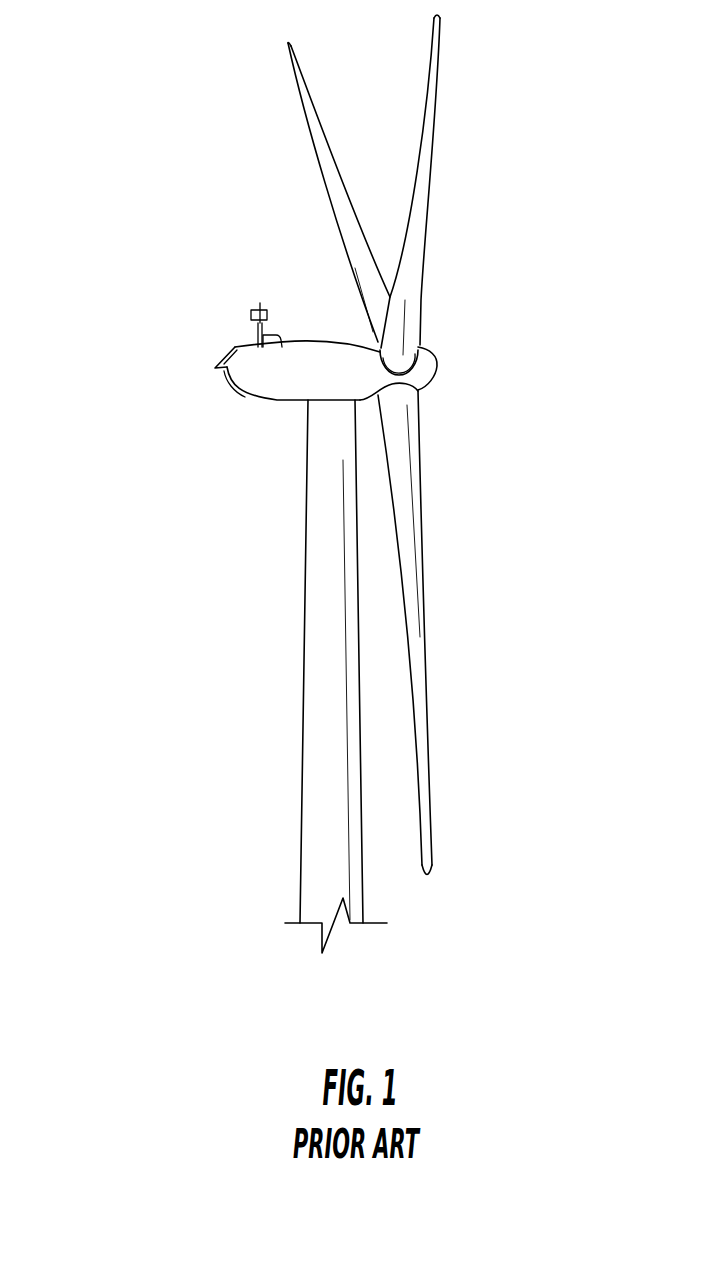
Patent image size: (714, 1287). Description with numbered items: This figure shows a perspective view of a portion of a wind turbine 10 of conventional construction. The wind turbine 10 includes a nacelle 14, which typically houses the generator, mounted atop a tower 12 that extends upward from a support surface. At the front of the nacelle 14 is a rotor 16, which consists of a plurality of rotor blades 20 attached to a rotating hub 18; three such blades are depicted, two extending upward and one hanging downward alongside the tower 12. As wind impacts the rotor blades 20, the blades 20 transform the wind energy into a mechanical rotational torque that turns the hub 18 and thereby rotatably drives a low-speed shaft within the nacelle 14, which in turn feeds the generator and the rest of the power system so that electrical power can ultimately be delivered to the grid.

The wind turbine 10 is at (188, 129).
The tower 12 is at (307, 720).
The nacelle 14 is at (272, 410).
The rotor 16 is at (452, 360).
The rotating hub 18 is at (434, 370).
The rotor blades 20 is at (342, 168).